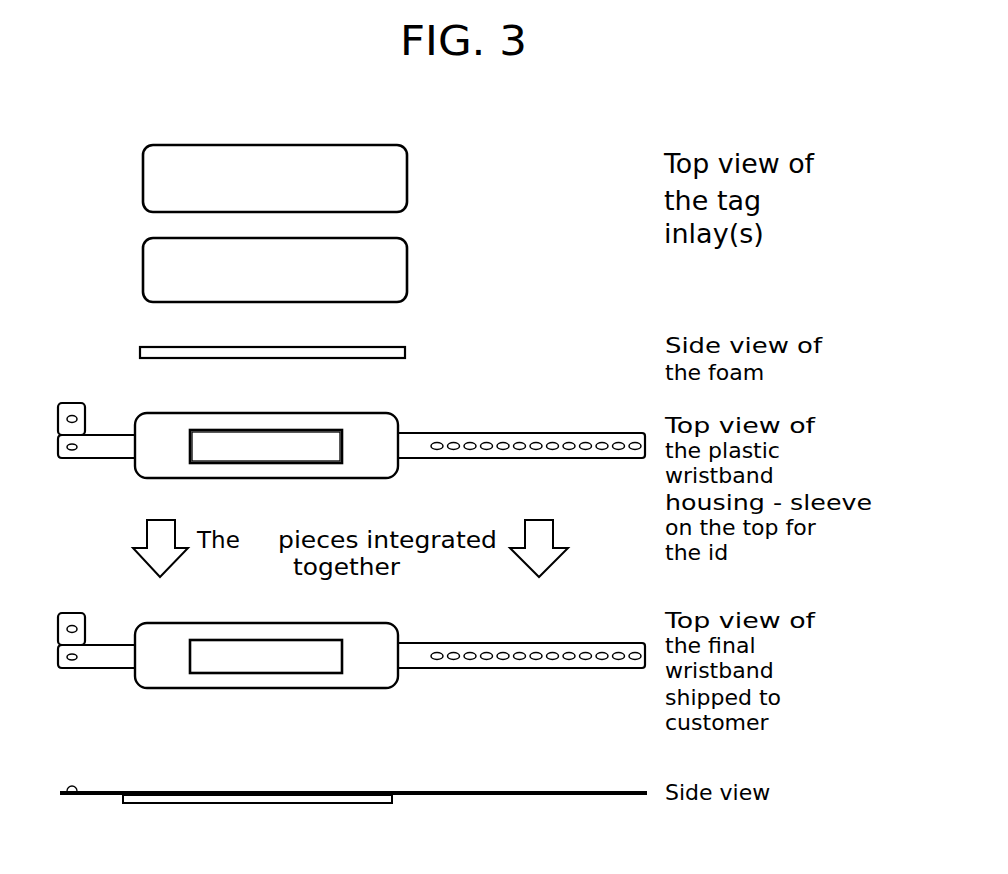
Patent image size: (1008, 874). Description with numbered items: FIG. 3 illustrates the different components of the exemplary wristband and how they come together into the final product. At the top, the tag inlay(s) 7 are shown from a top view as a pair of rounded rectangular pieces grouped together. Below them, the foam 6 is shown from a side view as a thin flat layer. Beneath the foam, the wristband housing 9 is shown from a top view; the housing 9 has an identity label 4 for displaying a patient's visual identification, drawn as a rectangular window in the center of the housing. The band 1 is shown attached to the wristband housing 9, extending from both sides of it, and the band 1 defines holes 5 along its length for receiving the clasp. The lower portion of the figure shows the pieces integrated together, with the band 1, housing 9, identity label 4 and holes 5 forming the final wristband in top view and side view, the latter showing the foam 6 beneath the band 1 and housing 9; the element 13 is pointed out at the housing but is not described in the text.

The band 1 is at (428, 433).
The identity label 4 is at (190, 432).
The holes 5 is at (555, 440).
The foam 6 is at (407, 355).
The tag inlay(s) 7 is at (415, 147).
The wristband housing 9 is at (310, 413).
The wristband housing 13 is at (398, 470).